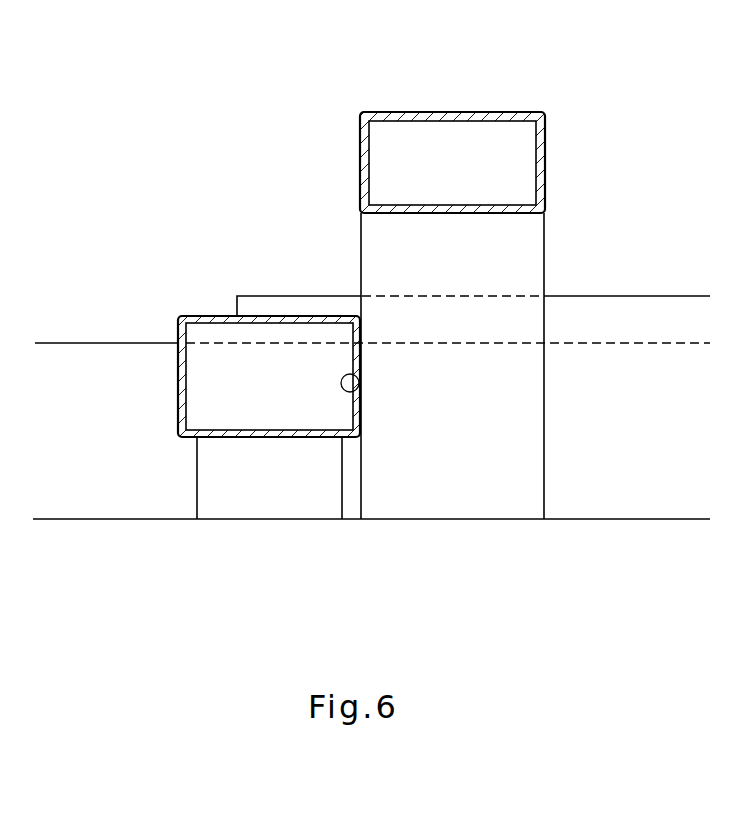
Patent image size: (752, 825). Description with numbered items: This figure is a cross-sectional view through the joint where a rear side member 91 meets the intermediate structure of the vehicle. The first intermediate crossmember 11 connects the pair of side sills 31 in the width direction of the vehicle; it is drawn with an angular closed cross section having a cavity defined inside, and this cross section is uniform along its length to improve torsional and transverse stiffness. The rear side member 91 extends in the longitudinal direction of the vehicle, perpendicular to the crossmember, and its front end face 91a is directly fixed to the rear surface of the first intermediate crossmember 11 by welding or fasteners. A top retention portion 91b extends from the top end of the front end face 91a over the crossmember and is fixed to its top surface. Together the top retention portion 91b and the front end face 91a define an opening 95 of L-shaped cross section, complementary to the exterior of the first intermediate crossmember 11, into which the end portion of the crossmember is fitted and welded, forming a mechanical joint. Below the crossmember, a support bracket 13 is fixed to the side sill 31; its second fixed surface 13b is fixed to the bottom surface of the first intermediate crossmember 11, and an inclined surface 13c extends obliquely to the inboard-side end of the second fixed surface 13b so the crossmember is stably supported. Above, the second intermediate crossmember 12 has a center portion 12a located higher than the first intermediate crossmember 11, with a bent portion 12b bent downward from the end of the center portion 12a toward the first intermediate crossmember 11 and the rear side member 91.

The second intermediate crossmember 12 is at (446, 267).
The center portion 12a is at (546, 160).
The bent portion 12b is at (546, 257).
The rear side member 91 is at (676, 308).
The front end face 91a is at (353, 392).
The top retention portion 91b is at (297, 307).
The side sill 31 is at (80, 363).
The first intermediate crossmember 11 is at (178, 380).
The opening 95 is at (309, 322).
The support bracket 13 is at (229, 514).
The second fixed surface 13b is at (244, 438).
The inclined surface 13c is at (314, 497).